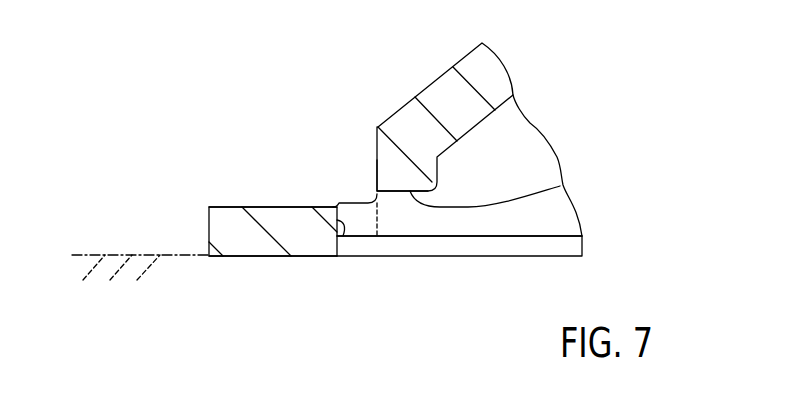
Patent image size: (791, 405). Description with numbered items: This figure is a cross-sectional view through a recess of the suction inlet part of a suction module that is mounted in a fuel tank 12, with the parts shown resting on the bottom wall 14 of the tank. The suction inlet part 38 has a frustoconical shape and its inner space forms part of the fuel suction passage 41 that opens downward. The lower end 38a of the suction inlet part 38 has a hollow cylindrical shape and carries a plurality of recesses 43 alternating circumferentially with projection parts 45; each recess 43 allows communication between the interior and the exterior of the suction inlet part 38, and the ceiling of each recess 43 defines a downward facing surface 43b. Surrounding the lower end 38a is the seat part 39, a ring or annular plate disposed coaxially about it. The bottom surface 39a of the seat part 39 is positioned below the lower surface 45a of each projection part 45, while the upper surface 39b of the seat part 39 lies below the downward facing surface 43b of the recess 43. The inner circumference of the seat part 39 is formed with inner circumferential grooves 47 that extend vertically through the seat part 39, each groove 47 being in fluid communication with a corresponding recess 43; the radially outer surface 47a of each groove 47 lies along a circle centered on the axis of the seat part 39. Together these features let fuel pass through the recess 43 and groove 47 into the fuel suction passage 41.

The fuel tank 12 is at (140, 230).
The bottom wall 14 is at (85, 265).
The suction inlet part 38 is at (443, 95).
The lower end 38a is at (398, 162).
The seat part 39 is at (230, 227).
The bottom surface 39a is at (267, 257).
The upper surface 39b is at (272, 207).
The fuel suction passage 41 is at (516, 134).
The recess 43 is at (553, 191).
The downward facing surface 43b is at (560, 186).
The projection part 45 is at (398, 218).
The lower surface 45a is at (428, 236).
The inner circumferential groove 47 is at (366, 270).
The radially outer surface 47a is at (347, 257).